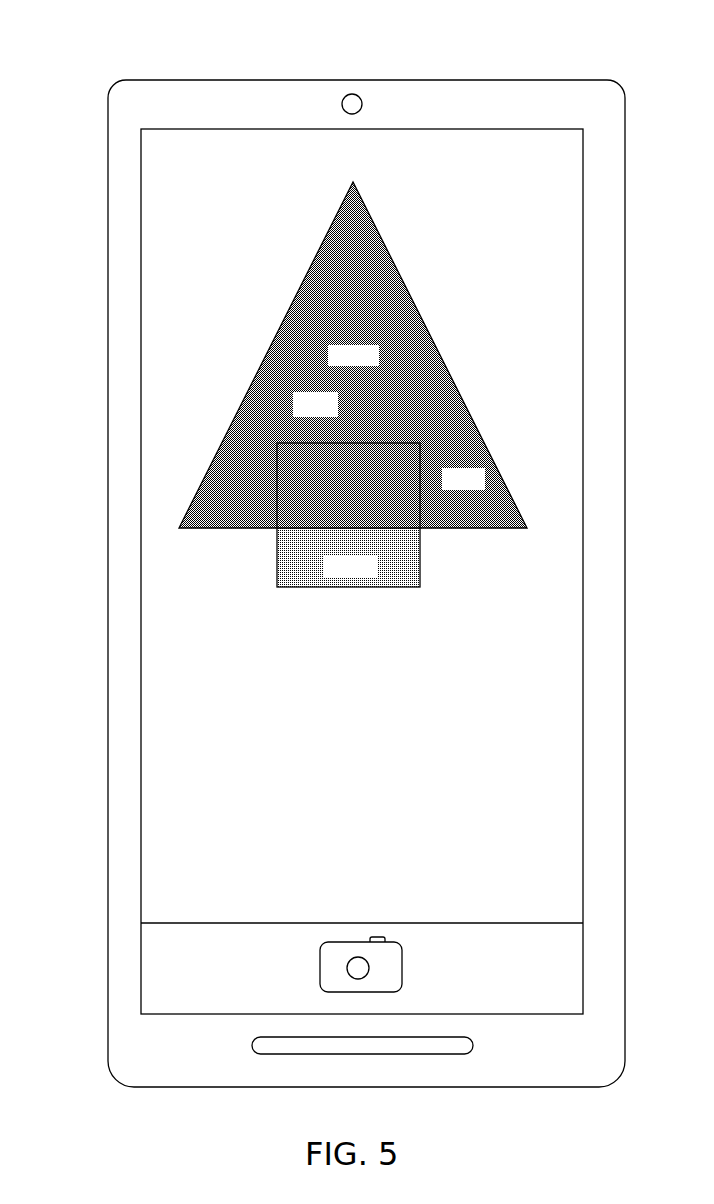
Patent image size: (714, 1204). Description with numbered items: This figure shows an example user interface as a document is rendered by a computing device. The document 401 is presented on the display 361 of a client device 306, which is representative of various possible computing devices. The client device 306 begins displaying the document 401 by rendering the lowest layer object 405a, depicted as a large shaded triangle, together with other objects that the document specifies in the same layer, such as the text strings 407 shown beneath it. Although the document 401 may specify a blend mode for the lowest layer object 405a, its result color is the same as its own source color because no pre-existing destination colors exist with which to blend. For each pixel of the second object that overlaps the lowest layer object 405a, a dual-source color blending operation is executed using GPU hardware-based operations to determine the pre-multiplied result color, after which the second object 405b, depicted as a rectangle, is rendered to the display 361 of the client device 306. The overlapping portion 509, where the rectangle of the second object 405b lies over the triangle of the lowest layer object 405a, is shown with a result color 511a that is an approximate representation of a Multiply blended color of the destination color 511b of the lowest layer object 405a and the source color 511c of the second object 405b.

The client device 306 is at (118, 91).
The display 361 is at (141, 222).
The document 401 is at (209, 182).
The lowest layer object 405a is at (378, 366).
The second object 405b is at (353, 384).
The overlapping portion 509 is at (389, 442).
The result color 511a is at (300, 472).
The destination color 511b is at (370, 292).
The source color 511c is at (398, 548).
The text strings 407 is at (170, 700).